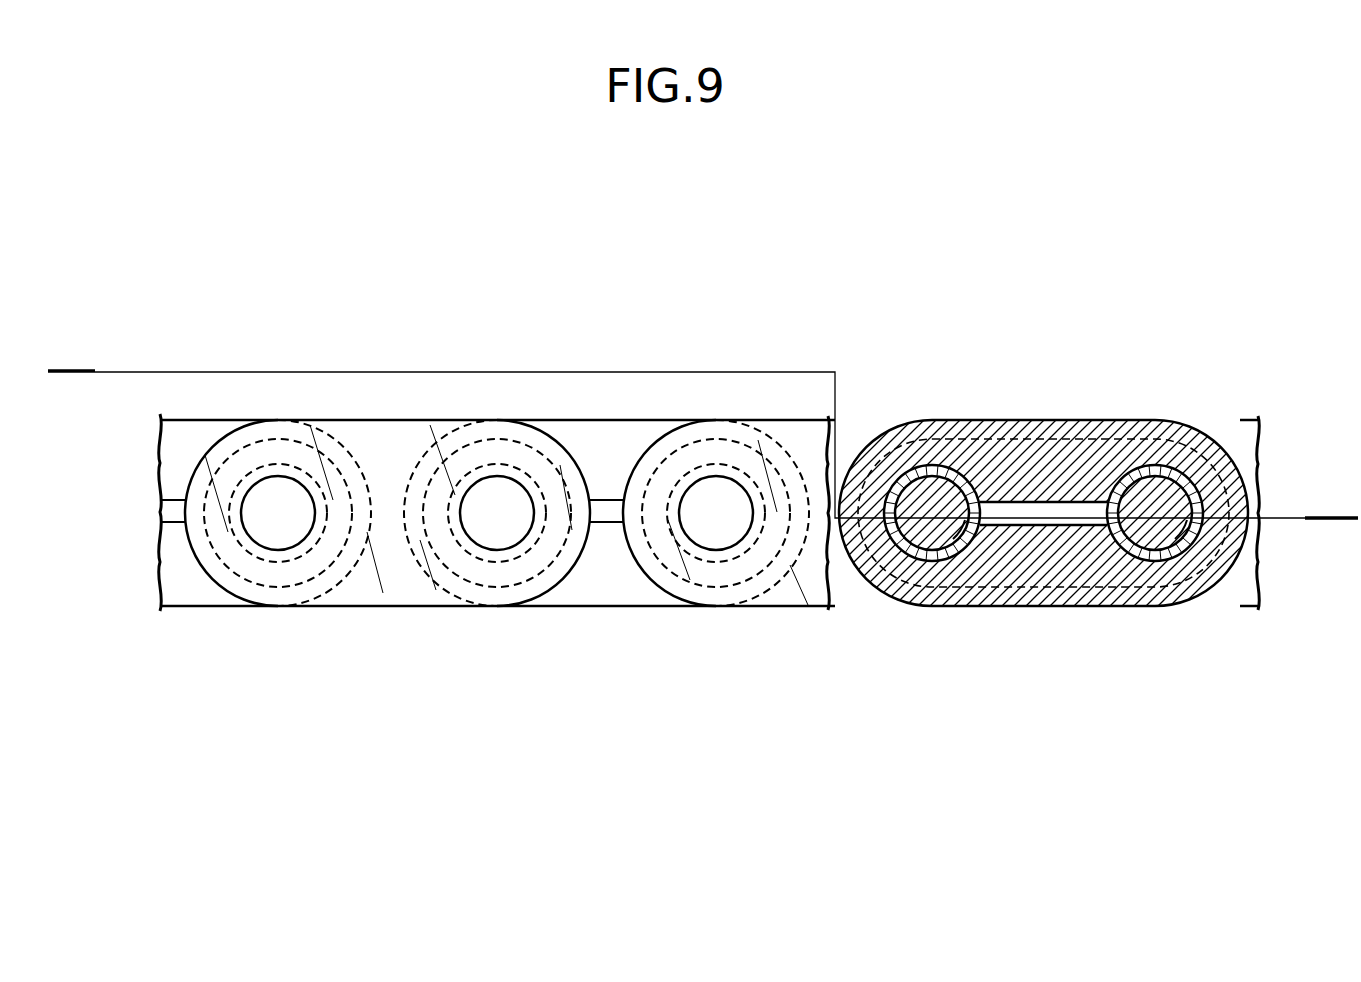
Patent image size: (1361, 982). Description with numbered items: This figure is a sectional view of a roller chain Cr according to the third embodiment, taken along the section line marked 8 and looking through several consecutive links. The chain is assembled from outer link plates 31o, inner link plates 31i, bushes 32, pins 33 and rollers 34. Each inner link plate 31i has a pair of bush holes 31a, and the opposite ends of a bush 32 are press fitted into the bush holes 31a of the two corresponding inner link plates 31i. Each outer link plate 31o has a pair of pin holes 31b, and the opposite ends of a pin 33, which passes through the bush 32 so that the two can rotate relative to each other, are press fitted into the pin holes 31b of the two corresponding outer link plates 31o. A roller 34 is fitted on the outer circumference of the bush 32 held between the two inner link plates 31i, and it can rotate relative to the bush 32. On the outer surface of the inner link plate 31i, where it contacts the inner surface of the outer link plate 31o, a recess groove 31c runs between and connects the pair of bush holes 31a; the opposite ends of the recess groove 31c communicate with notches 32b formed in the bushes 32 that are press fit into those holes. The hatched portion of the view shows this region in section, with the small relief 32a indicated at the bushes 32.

The section line VIII-VIII 8 is at (60, 362).
The roller chain Cr is at (759, 342).
The outer link plate 31o is at (395, 410).
The inner link plate 31i is at (600, 410).
The bush hole 31a is at (870, 562).
The pin hole 31b is at (268, 530).
The recess groove 31c is at (613, 498).
The bush 32 is at (295, 420).
The bushing gap 32a is at (925, 542).
The notch 32b is at (988, 528).
The pin 33 is at (278, 556).
The roller 34 is at (265, 420).